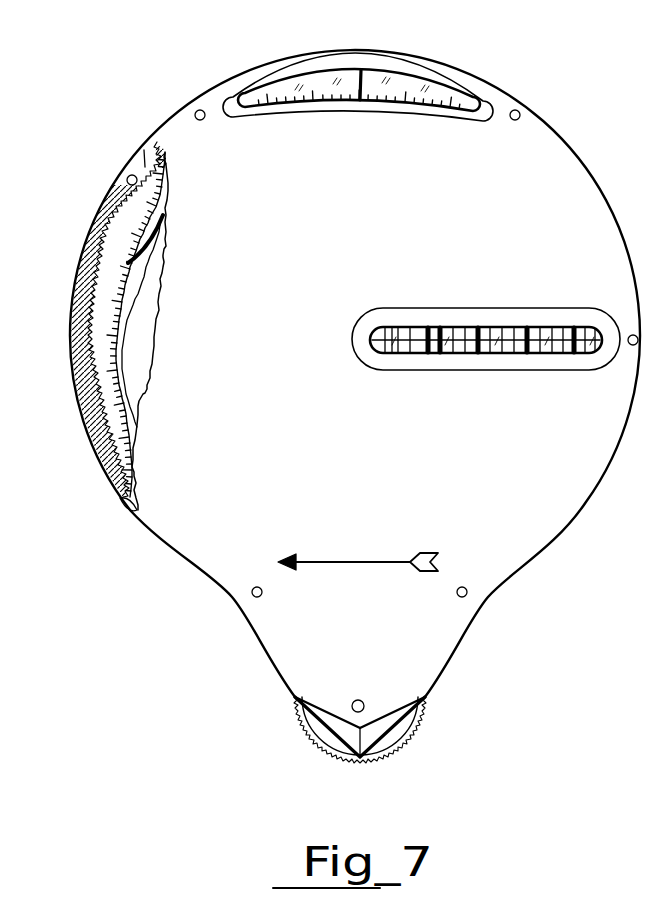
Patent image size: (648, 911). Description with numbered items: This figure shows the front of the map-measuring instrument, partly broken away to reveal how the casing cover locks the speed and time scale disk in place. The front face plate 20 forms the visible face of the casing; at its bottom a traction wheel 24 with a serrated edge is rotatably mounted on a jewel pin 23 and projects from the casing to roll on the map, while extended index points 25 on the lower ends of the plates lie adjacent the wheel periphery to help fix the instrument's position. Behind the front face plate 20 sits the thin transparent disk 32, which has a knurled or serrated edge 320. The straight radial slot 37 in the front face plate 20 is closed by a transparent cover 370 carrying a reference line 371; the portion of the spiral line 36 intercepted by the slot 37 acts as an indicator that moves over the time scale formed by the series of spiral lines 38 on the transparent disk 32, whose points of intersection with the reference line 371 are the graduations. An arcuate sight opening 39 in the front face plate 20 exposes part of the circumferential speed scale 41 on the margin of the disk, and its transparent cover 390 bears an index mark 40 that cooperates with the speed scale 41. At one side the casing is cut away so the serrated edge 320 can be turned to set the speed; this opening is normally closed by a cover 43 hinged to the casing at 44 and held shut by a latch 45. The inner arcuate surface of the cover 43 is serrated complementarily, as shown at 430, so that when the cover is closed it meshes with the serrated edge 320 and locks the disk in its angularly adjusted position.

The front face plate 20 is at (560, 522).
The jewel pin 23 is at (363, 699).
The traction wheel 24 is at (402, 732).
The index points 25 is at (358, 758).
The transparent disk 32 is at (99, 334).
The spiral line 36 is at (472, 327).
The radial slot 37 is at (537, 327).
The spiral lines 38 is at (440, 327).
The arcuate sight opening 39 is at (445, 80).
The index mark 40 is at (363, 68).
The speed scale 41 is at (397, 90).
The cover 43 is at (73, 317).
The hinge 44 is at (127, 172).
The latch 45 is at (121, 513).
The serrated edge 320 is at (92, 422).
The transparent cover 370 is at (377, 332).
The reference line 371 is at (392, 327).
The transparent cover 390 is at (283, 90).
The complementary serrations 430 is at (95, 370).